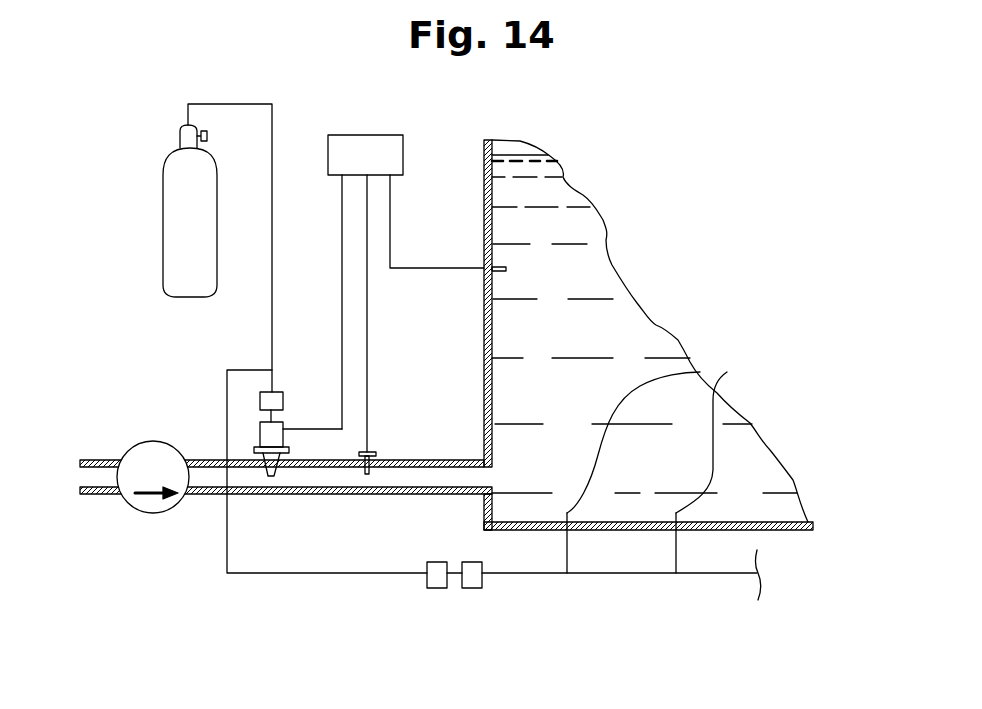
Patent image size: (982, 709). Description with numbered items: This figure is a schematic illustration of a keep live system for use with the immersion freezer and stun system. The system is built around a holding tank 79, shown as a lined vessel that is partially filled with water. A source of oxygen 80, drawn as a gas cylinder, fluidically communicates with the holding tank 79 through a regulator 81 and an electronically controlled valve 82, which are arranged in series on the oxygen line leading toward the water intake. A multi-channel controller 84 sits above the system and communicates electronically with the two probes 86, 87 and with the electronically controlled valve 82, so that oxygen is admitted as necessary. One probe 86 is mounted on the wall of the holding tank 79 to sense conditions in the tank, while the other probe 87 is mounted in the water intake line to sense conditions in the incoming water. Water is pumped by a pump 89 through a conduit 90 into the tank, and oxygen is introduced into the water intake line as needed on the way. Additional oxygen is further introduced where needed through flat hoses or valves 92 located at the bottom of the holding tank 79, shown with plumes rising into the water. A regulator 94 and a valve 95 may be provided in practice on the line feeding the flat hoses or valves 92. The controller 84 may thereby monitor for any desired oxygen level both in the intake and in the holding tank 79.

The holding tank 79 is at (483, 182).
The source of oxygen 80 is at (177, 181).
The regulator 81 is at (291, 392).
The electronically controlled valve 82 is at (283, 428).
The multi-channel controller 84 is at (373, 141).
The probe 86 is at (499, 271).
The probe 87 is at (375, 452).
The pump 89 is at (153, 447).
The conduit 90 is at (217, 479).
The flat hoses or valves 92 is at (700, 372).
The regulator 94 is at (427, 562).
The valve 95 is at (468, 562).